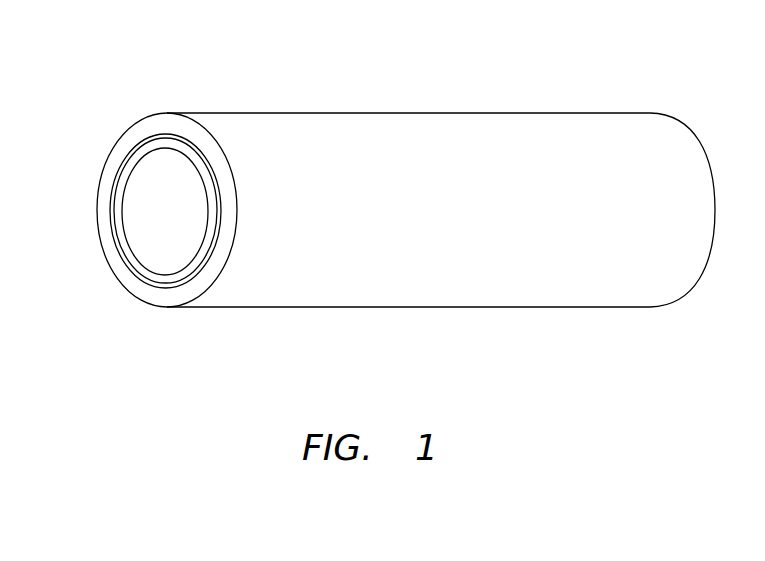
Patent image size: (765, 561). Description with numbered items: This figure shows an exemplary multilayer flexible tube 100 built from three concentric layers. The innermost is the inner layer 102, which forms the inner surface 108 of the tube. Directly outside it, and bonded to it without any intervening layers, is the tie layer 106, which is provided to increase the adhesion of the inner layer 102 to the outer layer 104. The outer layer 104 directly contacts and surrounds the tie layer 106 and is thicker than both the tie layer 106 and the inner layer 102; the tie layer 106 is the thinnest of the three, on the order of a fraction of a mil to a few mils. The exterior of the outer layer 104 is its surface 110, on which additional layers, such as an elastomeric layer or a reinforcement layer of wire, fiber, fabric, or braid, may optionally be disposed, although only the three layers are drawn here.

The multilayer flexible tube 100 is at (617, 42).
The inner layer 102 is at (123, 242).
The outer layer 104 is at (108, 185).
The tie layer 106 is at (113, 223).
The inner surface 108 is at (145, 178).
The surface of the outer layer 110 is at (124, 288).